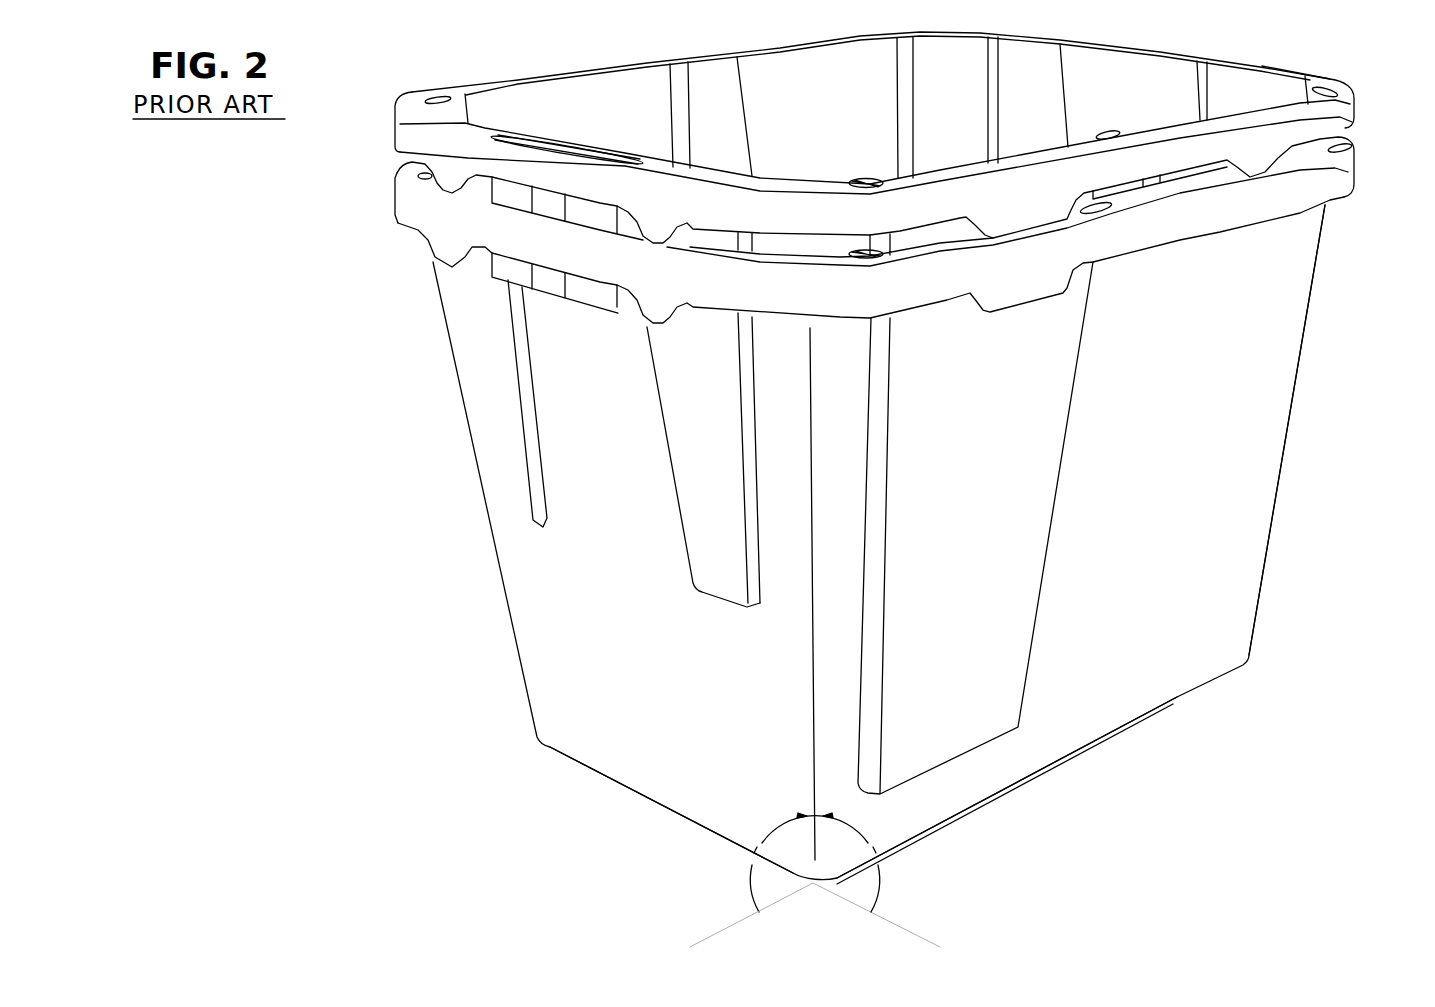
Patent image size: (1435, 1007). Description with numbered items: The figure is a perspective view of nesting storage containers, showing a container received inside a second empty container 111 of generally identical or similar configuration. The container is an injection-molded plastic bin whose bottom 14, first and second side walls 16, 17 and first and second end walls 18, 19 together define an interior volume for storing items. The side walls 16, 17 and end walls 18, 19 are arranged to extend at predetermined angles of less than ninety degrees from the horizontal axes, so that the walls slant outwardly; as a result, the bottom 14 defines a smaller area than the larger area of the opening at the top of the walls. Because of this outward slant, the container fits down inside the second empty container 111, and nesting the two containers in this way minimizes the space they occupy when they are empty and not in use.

The bottom 14 is at (1073, 757).
The first side wall 16 is at (567, 103).
The second side wall 17 is at (1238, 597).
The first end wall 18 is at (617, 763).
The second end wall 19 is at (1037, 63).
The second empty container 111 is at (1265, 67).